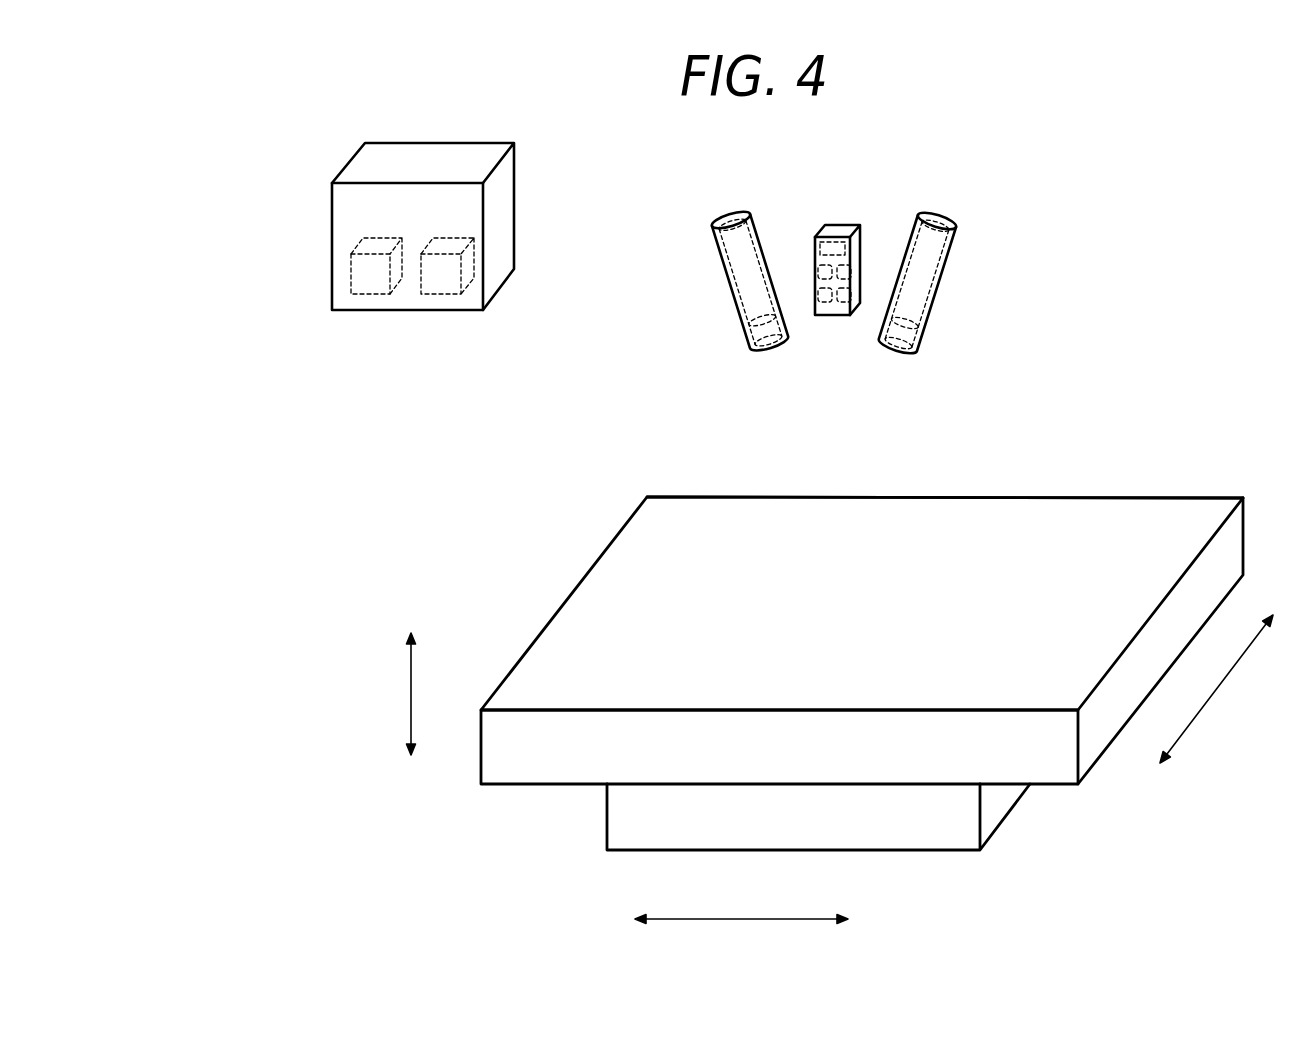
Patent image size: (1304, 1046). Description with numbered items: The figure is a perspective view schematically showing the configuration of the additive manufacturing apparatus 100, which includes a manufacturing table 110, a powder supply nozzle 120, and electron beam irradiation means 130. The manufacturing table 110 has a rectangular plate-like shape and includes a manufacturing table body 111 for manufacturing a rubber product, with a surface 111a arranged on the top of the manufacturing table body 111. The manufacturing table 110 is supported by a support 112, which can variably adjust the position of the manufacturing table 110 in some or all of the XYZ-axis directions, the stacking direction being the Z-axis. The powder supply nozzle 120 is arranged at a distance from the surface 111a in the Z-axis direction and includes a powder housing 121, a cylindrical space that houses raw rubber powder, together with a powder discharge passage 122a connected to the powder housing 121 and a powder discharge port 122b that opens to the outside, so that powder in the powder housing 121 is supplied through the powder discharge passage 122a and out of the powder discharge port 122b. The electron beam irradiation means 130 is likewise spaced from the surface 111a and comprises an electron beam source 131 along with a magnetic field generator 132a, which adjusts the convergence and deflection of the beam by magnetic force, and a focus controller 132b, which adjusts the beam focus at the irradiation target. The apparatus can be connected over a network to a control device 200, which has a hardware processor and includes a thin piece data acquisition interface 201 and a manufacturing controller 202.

The additive manufacturing apparatus 100 is at (1136, 310).
The manufacturing table 110 is at (555, 572).
The manufacturing table body 111 is at (862, 654).
The surface 111a is at (781, 557).
The support 112 is at (875, 835).
The powder supply nozzle 120 is at (700, 208).
The powder housing 121 is at (740, 265).
The powder discharge passage 122a is at (760, 326).
The powder discharge port 122b is at (768, 355).
The electron beam irradiation means 130 is at (852, 210).
The electron beam source 131 is at (826, 232).
The magnetic field generator 132a is at (814, 268).
The focus controller 132b is at (822, 315).
The control device 200 is at (310, 196).
The thin piece data acquisition interface 201 is at (372, 282).
The manufacturing controller 202 is at (442, 282).